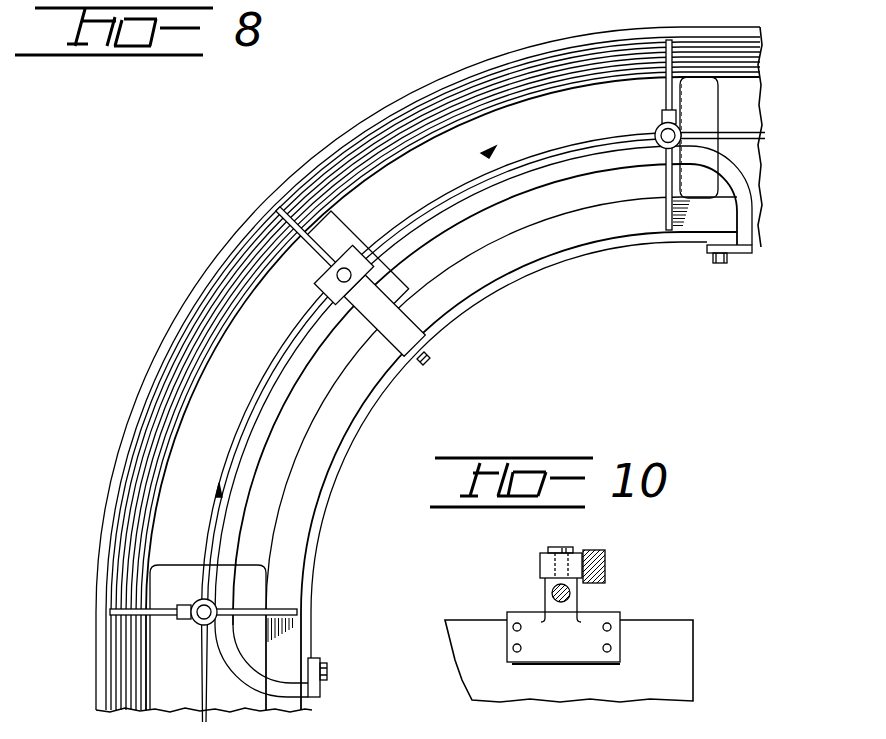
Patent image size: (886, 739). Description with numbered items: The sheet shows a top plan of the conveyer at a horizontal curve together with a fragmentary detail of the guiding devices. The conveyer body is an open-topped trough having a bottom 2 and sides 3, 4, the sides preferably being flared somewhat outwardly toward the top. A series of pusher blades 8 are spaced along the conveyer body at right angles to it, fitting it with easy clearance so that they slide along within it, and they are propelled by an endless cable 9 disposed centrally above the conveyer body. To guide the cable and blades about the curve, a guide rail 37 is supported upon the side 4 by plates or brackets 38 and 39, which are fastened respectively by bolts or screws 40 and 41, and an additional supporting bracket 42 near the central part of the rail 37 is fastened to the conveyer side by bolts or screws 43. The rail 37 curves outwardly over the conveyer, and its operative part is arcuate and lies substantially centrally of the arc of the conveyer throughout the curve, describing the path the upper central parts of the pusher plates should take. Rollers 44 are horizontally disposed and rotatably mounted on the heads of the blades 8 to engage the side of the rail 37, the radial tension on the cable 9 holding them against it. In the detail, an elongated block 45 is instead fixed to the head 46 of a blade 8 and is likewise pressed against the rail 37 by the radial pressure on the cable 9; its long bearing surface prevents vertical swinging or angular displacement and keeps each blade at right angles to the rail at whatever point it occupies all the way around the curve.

In FIG. 8, the bottom 2 is at (212, 393).
In FIG. 8, the side 3 is at (215, 287).
In FIG. 8, the side 4 is at (475, 306).
In FIG. 8, the pusher blade 8 is at (666, 88).
In FIG. 10, the pusher blade 8 is at (668, 622).
In FIG. 8, the endless cable 9 is at (744, 133).
In FIG. 10, the endless cable 9 is at (551, 593).
In FIG. 8, the guide rail 37 is at (563, 178).
In FIG. 10, the guide rail 37 is at (606, 565).
In FIG. 8, the bracket 38 is at (316, 658).
In FIG. 8, the bracket 39 is at (740, 254).
In FIG. 8, the bolt 40 is at (328, 672).
In FIG. 8, the bolt 41 is at (718, 263).
In FIG. 8, the supporting bracket 42 is at (427, 348).
In FIG. 8, the bolt 43 is at (423, 367).
In FIG. 8, the roller 44 is at (656, 126).
In FIG. 8, the elongated block 45 is at (316, 285).
In FIG. 10, the elongated block 45 is at (540, 568).
In FIG. 10, the head 46 is at (574, 609).